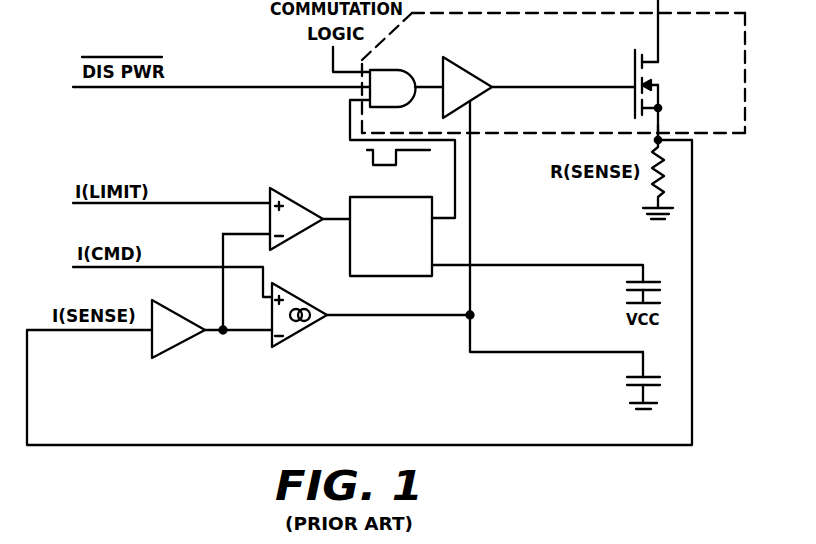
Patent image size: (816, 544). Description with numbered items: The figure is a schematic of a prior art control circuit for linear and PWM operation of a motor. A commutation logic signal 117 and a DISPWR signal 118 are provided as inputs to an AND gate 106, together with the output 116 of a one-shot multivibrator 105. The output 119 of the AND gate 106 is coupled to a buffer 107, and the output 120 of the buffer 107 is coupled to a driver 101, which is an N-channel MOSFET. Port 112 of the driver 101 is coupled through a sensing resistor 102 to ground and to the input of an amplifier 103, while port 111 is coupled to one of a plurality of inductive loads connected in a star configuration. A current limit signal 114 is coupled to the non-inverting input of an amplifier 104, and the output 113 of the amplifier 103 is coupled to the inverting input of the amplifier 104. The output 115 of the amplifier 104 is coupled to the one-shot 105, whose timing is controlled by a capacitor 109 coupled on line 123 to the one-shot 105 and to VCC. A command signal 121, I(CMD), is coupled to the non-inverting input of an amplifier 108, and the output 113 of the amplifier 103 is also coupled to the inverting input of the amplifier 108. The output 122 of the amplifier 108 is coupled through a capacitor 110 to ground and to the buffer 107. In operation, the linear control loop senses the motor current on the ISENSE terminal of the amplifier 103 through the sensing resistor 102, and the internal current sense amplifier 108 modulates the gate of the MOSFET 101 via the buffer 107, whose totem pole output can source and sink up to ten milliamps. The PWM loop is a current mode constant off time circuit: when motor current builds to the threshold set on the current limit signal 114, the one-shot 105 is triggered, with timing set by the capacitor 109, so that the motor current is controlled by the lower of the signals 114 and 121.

The driver 101 is at (634, 62).
The sensing resistor 102 is at (650, 186).
The amplifier 103 is at (153, 358).
The amplifier 104 is at (290, 189).
The one-shot multivibrator 105 is at (400, 278).
The AND gate 106 is at (405, 68).
The buffer 107 is at (482, 80).
The amplifier 108 is at (290, 347).
The capacitor 109 is at (630, 284).
The capacitor 110 is at (634, 377).
The port 111 is at (658, 49).
The port 112 is at (658, 128).
The output 113 is at (236, 333).
The current limit signal 114 is at (170, 200).
The output 115 is at (334, 218).
The output 116 is at (350, 127).
The commutation logic signal 117 is at (333, 72).
The DISPWR signal 118 is at (210, 85).
The output 119 is at (433, 84).
The output 120 is at (533, 86).
The signal 121 is at (160, 267).
The output 122 is at (387, 318).
The line 123 is at (503, 265).